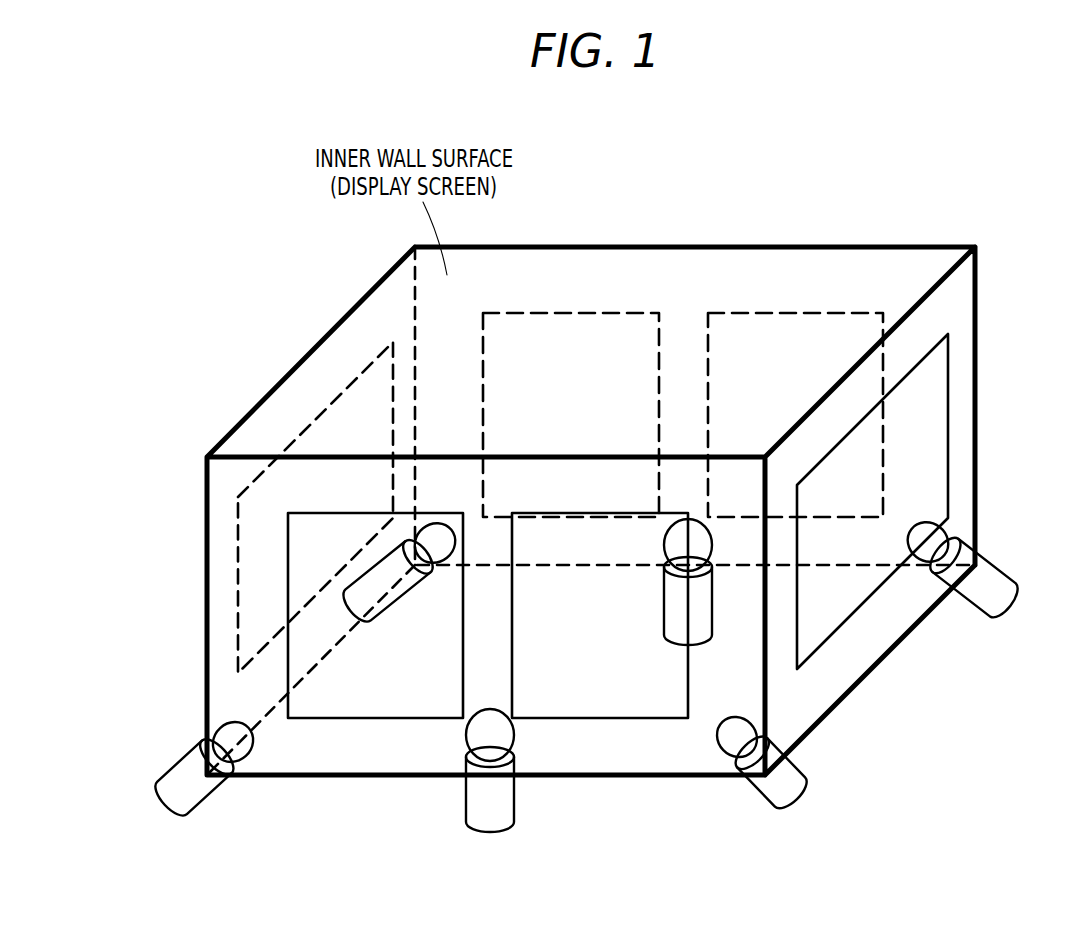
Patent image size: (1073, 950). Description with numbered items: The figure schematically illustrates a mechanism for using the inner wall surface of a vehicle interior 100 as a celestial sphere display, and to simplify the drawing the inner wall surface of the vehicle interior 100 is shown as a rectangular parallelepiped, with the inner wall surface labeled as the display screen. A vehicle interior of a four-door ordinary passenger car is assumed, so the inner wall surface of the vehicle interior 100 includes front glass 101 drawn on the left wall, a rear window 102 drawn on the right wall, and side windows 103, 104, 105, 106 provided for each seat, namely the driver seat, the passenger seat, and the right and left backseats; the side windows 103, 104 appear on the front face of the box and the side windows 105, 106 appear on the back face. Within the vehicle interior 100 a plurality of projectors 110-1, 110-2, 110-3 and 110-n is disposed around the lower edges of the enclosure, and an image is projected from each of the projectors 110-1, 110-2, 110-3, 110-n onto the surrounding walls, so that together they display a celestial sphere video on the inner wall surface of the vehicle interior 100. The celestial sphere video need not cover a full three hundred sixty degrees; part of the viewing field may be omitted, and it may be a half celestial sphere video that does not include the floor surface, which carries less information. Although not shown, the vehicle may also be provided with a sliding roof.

The vehicle interior 100 is at (673, 208).
The front glass 101 is at (330, 430).
The rear window 102 is at (940, 418).
The side window 103 is at (355, 695).
The side window 104 is at (628, 695).
The side window 105 is at (563, 333).
The side window 106 is at (815, 330).
The projector 110-1 is at (205, 787).
The projector 110-2 is at (490, 832).
The projector 110-3 is at (790, 797).
The projector 110-n is at (998, 608).